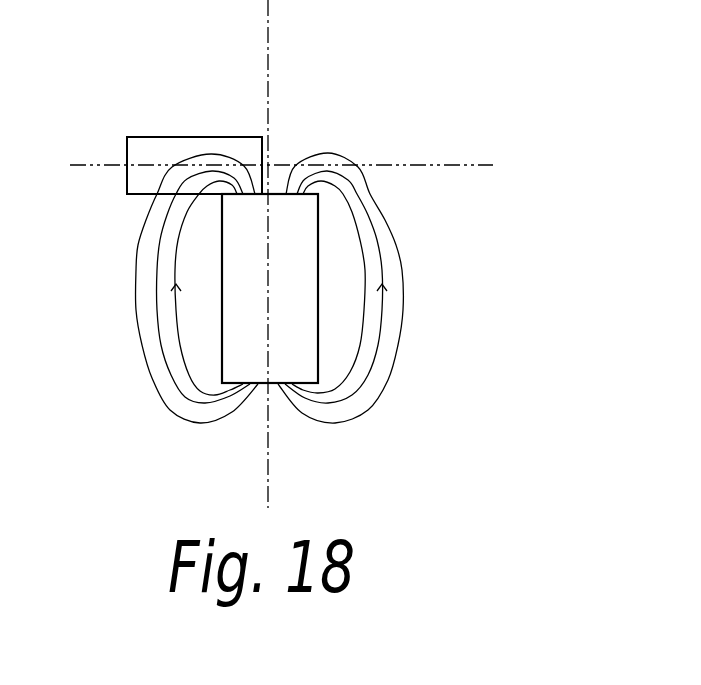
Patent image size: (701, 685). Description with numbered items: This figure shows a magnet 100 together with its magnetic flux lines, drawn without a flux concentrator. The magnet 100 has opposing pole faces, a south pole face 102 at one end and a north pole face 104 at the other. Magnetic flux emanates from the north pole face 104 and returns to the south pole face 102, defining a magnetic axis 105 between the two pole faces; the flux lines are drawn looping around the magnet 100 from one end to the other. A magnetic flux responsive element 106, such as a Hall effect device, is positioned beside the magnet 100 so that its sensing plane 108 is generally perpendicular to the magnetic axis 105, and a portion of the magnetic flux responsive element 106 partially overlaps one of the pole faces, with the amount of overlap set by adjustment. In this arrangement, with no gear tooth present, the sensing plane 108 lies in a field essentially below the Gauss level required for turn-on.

The magnet 100 is at (310, 239).
The south pole face 102 is at (289, 190).
The north pole face 104 is at (264, 386).
The magnetic axis 105 is at (268, 6).
The magnetic flux responsive element 106 is at (192, 137).
The sensing plane 108 is at (80, 168).